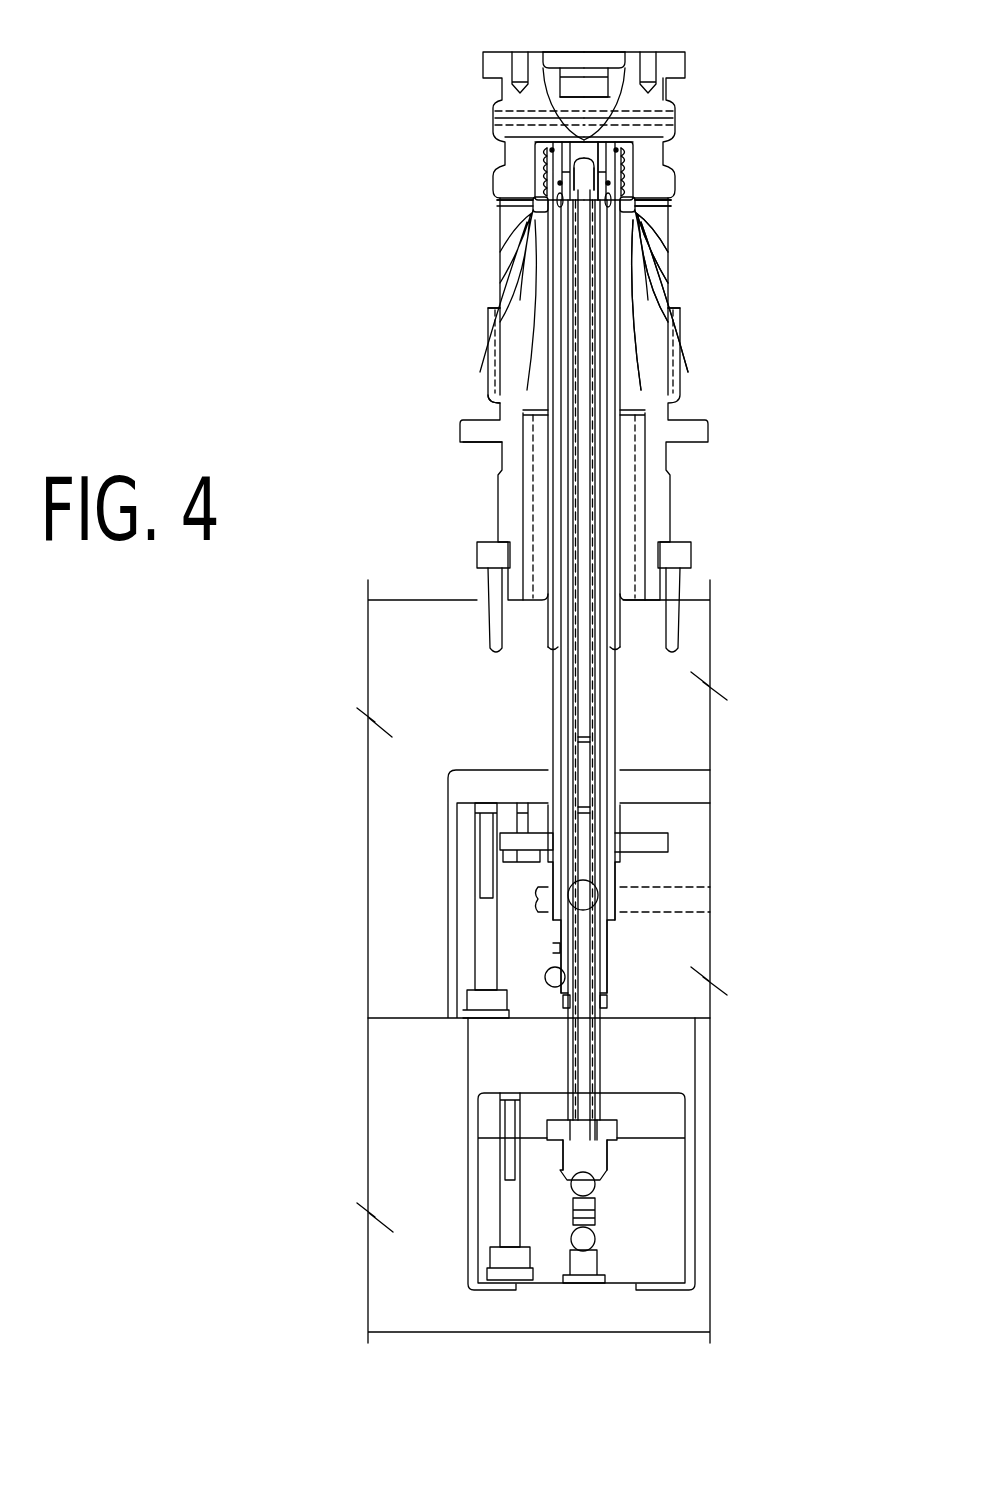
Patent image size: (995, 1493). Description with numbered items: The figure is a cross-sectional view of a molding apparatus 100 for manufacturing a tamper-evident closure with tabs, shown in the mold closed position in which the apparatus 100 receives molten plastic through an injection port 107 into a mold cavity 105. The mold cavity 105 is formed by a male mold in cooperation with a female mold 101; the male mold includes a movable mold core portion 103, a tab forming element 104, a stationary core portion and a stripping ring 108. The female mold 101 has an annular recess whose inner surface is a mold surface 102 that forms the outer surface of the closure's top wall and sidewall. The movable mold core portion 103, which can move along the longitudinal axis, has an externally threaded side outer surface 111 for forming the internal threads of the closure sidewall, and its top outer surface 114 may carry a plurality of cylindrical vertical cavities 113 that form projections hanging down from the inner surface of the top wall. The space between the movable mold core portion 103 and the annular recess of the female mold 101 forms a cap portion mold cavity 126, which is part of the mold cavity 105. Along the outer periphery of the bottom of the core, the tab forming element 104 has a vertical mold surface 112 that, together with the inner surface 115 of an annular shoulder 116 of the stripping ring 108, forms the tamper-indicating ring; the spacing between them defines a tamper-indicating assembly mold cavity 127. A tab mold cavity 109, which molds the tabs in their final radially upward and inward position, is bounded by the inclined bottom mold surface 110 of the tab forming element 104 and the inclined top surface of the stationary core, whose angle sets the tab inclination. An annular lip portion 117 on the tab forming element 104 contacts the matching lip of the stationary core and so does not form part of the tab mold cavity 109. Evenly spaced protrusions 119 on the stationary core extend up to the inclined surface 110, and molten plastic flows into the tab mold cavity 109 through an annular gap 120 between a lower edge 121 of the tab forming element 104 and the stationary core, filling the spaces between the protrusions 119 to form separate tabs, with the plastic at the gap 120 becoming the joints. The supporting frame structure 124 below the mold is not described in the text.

The molding apparatus 100 is at (361, 91).
The female mold 101 is at (513, 96).
The mold surface 102 is at (535, 152).
The movable mold core portion 103 is at (615, 175).
The tab forming element 104 is at (533, 205).
The mold cavity 105 is at (537, 177).
The injection port 107 is at (590, 137).
The stripping ring 108 is at (498, 442).
The tab mold cavity 109 is at (508, 320).
The inclined bottom mold surface 110 is at (630, 203).
The externally threaded side outer surface 111 is at (635, 172).
The vertical mold surface 112 is at (630, 198).
The cylindrical vertical cavities 113 is at (615, 140).
The top outer surface 114 is at (558, 140).
The inner surface 115 is at (500, 252).
The annular shoulder 116 is at (667, 227).
The annular lip portion 117 is at (493, 345).
The protrusions 119 is at (480, 370).
The annular gap 120 is at (507, 280).
The lower edge 121 is at (643, 242).
The support frame 124 is at (448, 865).
The cap portion mold cavity 126 is at (553, 141).
The tamper-indicating assembly mold cavity 127 is at (527, 202).